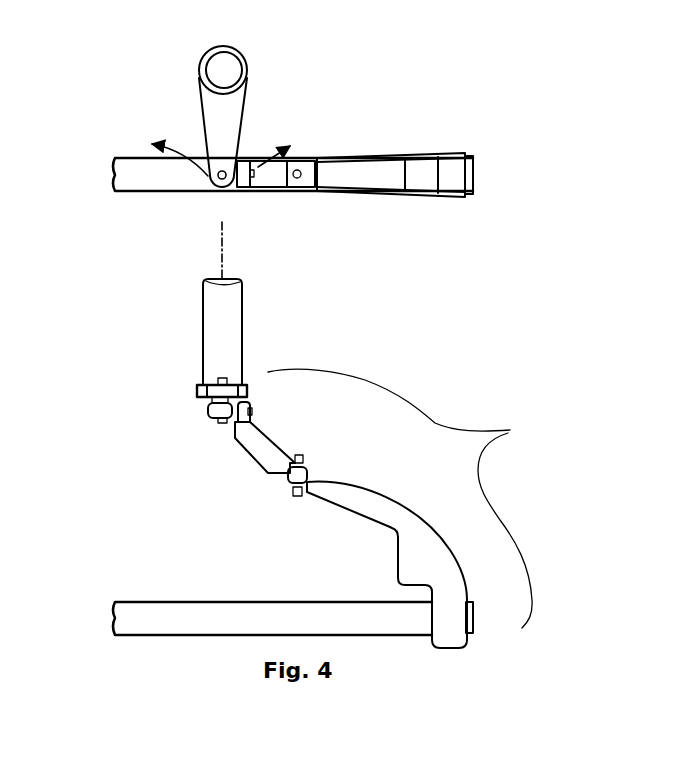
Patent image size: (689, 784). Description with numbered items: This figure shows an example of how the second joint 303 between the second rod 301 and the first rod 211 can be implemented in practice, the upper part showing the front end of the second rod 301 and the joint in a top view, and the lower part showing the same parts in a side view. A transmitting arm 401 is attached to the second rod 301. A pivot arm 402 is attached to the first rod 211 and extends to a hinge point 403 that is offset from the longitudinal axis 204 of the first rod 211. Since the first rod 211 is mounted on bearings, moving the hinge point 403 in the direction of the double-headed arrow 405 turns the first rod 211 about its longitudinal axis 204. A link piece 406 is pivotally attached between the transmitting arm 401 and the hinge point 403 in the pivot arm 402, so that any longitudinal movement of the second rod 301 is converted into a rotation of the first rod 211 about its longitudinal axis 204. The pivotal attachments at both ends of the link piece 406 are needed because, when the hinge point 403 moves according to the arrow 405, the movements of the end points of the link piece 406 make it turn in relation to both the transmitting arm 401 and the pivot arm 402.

The second rod 301 is at (123, 157).
The transmitting arm 401 is at (392, 165).
The link piece 406 is at (275, 182).
The pivot arm 402 is at (232, 116).
The first rod 211 is at (229, 74).
The hinge point 403 is at (210, 189).
The double-headed arrow 405 is at (178, 153).
The longitudinal axis 204 is at (222, 255).
The second joint 303 is at (407, 498).